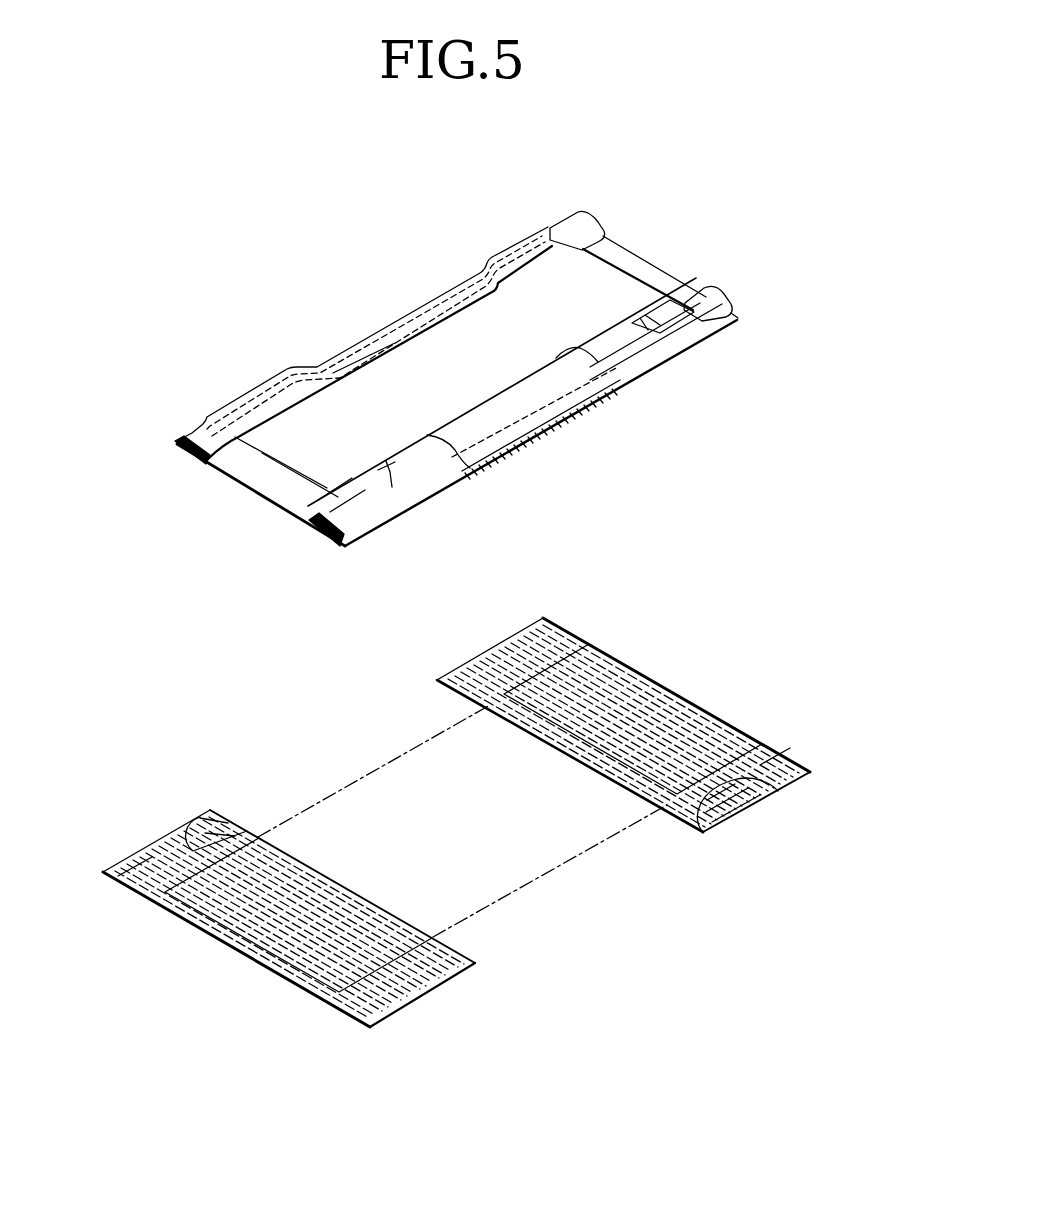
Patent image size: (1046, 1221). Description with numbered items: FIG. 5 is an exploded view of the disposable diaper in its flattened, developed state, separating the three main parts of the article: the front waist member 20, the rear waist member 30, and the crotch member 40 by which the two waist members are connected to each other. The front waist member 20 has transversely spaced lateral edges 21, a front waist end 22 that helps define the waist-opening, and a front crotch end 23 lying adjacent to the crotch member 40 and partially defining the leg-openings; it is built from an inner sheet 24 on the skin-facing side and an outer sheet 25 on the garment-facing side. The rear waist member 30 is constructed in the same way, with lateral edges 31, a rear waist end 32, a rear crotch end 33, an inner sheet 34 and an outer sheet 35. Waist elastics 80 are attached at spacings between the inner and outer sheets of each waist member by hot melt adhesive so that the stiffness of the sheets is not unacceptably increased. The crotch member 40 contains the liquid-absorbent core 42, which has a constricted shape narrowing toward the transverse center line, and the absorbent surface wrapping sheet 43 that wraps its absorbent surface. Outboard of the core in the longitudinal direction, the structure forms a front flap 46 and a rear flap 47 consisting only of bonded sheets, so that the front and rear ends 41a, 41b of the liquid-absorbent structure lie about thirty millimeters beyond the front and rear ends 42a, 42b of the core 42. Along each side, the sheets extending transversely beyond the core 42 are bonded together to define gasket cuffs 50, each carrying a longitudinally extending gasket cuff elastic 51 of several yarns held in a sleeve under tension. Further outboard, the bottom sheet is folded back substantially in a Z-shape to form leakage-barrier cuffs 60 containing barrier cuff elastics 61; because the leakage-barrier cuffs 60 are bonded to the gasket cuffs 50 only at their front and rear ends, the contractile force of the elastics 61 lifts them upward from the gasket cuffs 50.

The front waist member 20 is at (91, 841).
The lateral edge 21 is at (155, 836).
The front waist end 22 is at (281, 977).
The front crotch end 23 is at (365, 903).
The inner sheet 24 is at (143, 873).
The outer sheet 25 is at (227, 827).
The rear waist member 30 is at (527, 580).
The lateral edge 31 is at (505, 642).
The rear waist end 32 is at (683, 697).
The rear crotch end 33 is at (565, 757).
The inner sheet 34 is at (763, 762).
The outer sheet 35 is at (720, 807).
The crotch member 40 is at (636, 170).
The front end of liquid-absorbent structure 41a is at (242, 490).
The rear end of liquid-absorbent structure 41b is at (688, 282).
The liquid-absorbent core 42 is at (427, 353).
The front end of core 42a is at (296, 472).
The rear end of core 42b is at (640, 270).
The absorbent surface wrapping sheet 43 is at (310, 410).
The front flap 46 is at (237, 467).
The rear flap 47 is at (642, 263).
The gasket cuff 50 is at (540, 438).
The gasket cuff elastic 51 is at (615, 392).
The leakage-barrier cuff 60 is at (527, 243).
The barrier cuff elastic 61 is at (450, 300).
The waist elastic 80 is at (742, 800).